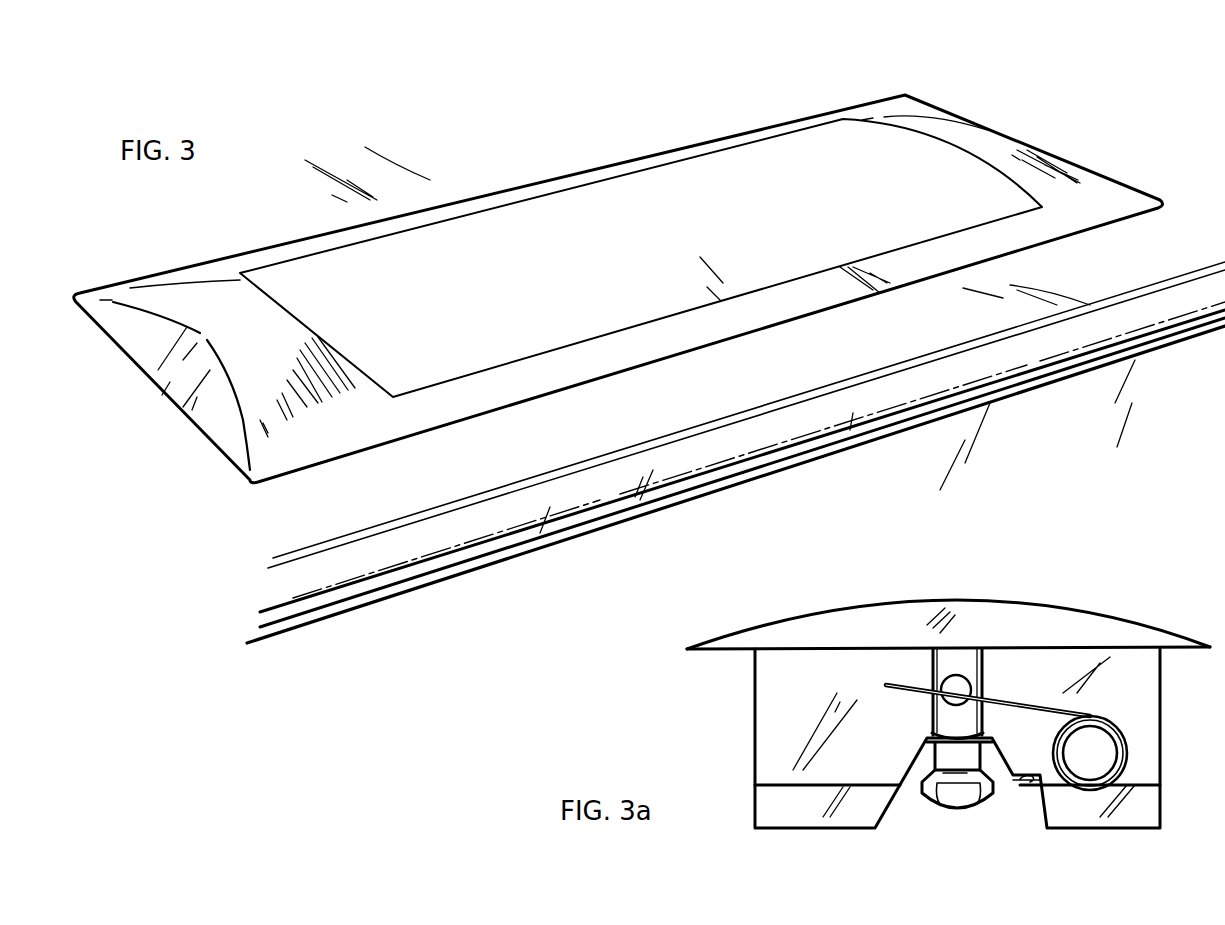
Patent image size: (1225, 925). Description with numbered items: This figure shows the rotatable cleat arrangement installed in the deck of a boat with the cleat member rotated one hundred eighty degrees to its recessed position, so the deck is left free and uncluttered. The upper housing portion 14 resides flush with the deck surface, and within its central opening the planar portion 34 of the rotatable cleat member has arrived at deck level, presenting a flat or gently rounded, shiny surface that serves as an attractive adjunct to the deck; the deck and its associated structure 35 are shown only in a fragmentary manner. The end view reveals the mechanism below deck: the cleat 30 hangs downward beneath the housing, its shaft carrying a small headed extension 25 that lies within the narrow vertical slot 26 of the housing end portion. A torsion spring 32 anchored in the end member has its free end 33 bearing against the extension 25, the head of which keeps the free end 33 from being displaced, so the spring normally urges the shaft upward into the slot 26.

In FIG. 3, the upper housing portion 14 is at (1123, 193).
In FIG. 3, the planar portion 34 is at (800, 140).
In FIG. 3, the mounting rails 35 is at (497, 460).
In FIG. 3A, the extension 25 is at (952, 685).
In FIG. 3A, the slot 26 is at (983, 673).
In FIG. 3A, the free end of spring 33 is at (888, 680).
In FIG. 3A, the torsion spring 32 is at (1120, 753).
In FIG. 3A, the cleat 30 is at (967, 797).